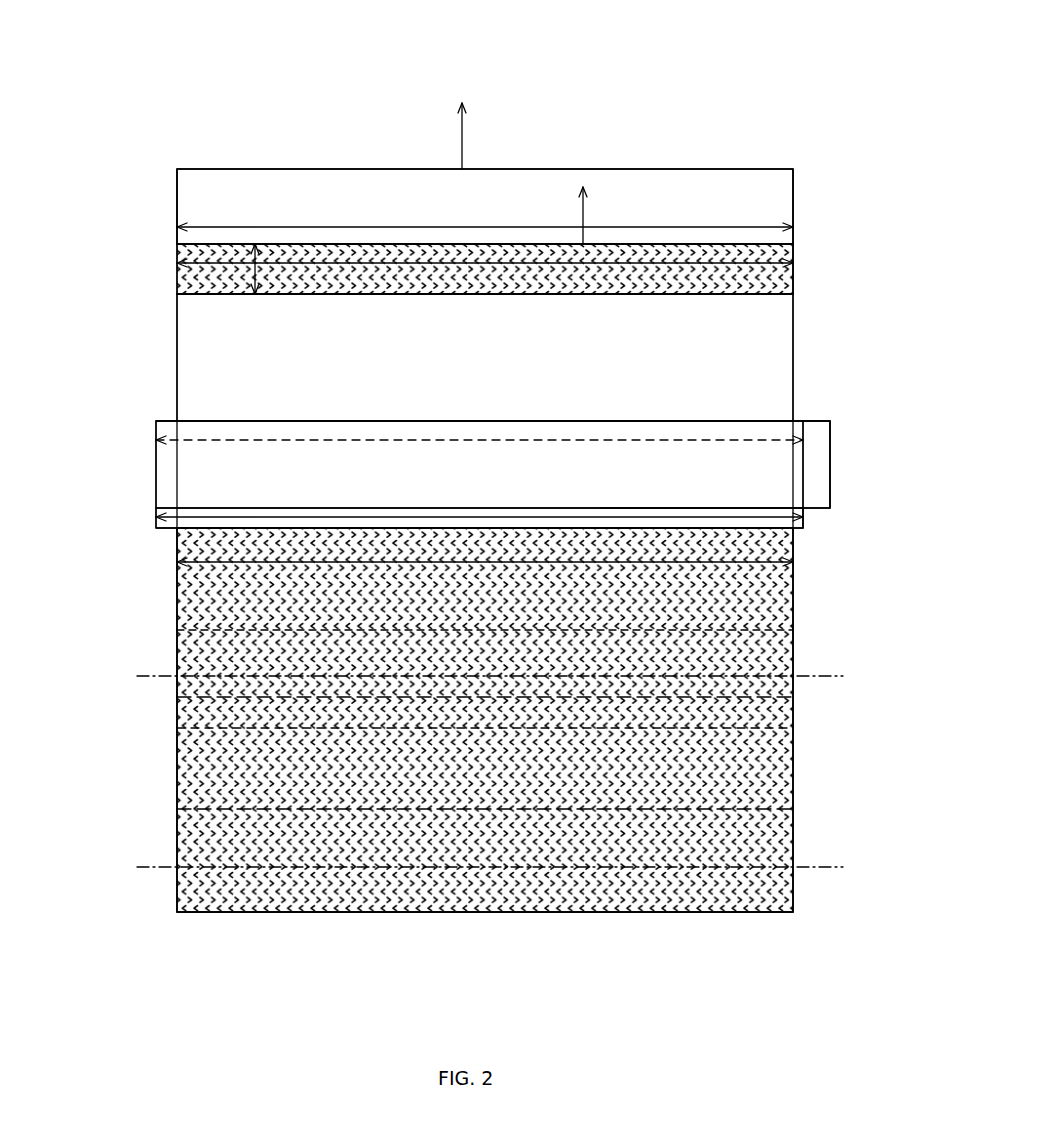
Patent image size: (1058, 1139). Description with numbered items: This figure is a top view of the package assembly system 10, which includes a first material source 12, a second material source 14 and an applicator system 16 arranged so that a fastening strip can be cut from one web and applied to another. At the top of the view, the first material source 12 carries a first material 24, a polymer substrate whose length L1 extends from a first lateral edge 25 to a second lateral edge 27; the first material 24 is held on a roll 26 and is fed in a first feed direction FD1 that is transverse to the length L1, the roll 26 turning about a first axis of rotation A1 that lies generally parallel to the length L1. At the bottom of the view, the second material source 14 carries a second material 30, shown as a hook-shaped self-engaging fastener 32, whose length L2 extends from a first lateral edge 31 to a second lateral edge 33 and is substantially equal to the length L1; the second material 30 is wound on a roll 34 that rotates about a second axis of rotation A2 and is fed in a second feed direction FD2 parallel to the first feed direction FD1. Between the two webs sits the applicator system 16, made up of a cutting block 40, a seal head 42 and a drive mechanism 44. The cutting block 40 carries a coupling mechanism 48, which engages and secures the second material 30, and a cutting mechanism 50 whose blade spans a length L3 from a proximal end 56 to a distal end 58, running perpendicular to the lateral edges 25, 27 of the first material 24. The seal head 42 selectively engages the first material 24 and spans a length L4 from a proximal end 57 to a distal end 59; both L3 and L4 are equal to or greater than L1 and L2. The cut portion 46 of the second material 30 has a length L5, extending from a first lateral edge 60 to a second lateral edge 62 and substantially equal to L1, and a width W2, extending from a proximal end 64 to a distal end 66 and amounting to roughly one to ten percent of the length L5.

The package assembly system 10 is at (802, 80).
The first material source 12 is at (815, 648).
The second material source 14 is at (815, 853).
The applicator system 16 is at (845, 423).
The first material 24 is at (245, 185).
The first lateral edge 25 is at (177, 200).
The roll 26 is at (793, 683).
The second lateral edge 27 is at (793, 197).
The second material 30 is at (190, 605).
The first lateral edge 31 is at (177, 752).
The self-engaging fastener 32 is at (758, 787).
The second lateral edge 33 is at (793, 742).
The roll 34 is at (793, 892).
The cutting block 40 is at (133, 405).
The seal head 42 is at (315, 405).
The drive mechanism 44 is at (838, 483).
The portion 46 is at (700, 287).
The coupling mechanism 48 is at (193, 473).
The cutting mechanism 50 is at (660, 507).
The proximal end 56 is at (157, 512).
The proximal end 57 is at (157, 440).
The distal end 58 is at (803, 528).
The distal end 59 is at (803, 440).
The first lateral edge 60 is at (177, 286).
The second lateral edge 62 is at (793, 287).
The proximal end 64 is at (662, 248).
The distal end 66 is at (560, 297).
The length L1 is at (485, 217).
The length L2 is at (730, 562).
The length L3 is at (520, 517).
The length L4 is at (473, 438).
The length L5 is at (395, 264).
The width W2 is at (260, 266).
The first feed direction FD1 is at (463, 137).
The second feed direction FD2 is at (584, 216).
The first axis of rotation A1 is at (140, 675).
The second axis of rotation A2 is at (140, 865).